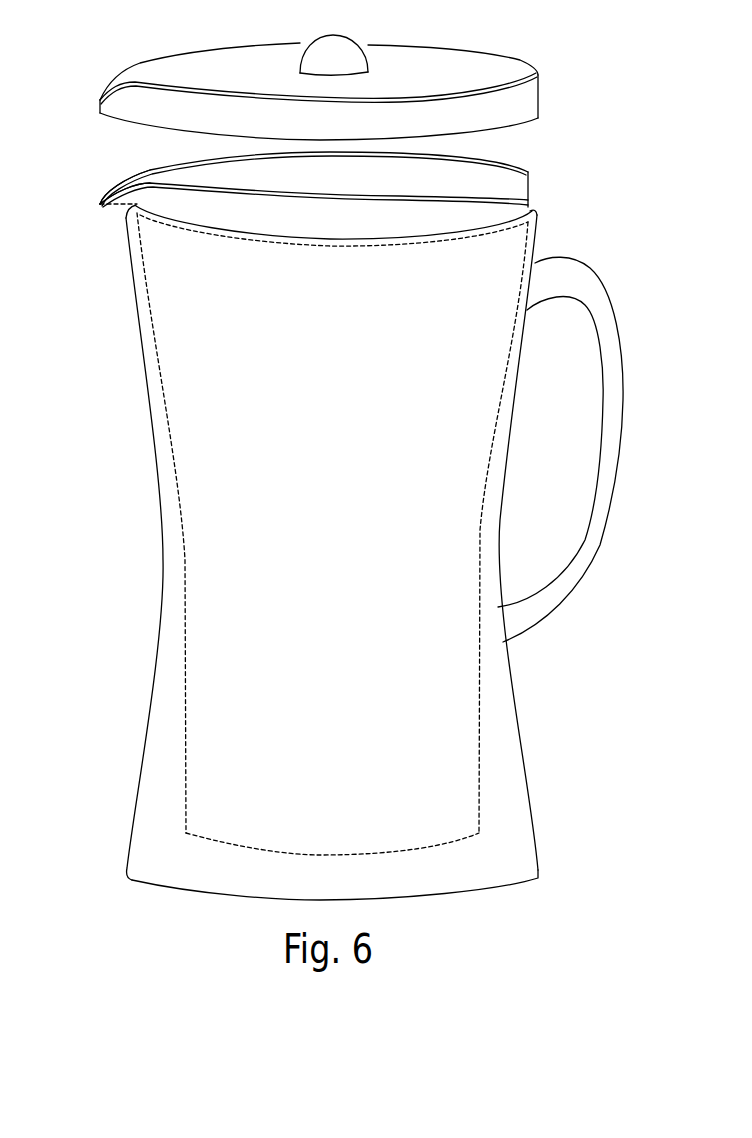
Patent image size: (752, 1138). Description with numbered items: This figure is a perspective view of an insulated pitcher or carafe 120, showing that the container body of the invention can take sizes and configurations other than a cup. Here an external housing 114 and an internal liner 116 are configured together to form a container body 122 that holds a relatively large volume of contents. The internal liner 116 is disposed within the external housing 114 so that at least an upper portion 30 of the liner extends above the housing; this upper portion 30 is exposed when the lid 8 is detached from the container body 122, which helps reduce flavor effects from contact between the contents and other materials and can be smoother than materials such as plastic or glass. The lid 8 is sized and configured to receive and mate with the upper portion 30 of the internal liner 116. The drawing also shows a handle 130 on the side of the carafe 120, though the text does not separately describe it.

The lid 8 is at (533, 100).
The upper portion 30 is at (521, 197).
The external housing 114 is at (163, 559).
The internal liner 116 is at (106, 196).
The insulated pitcher or carafe 120 is at (579, 222).
The container body 122 is at (515, 718).
The handle 130 is at (592, 525).